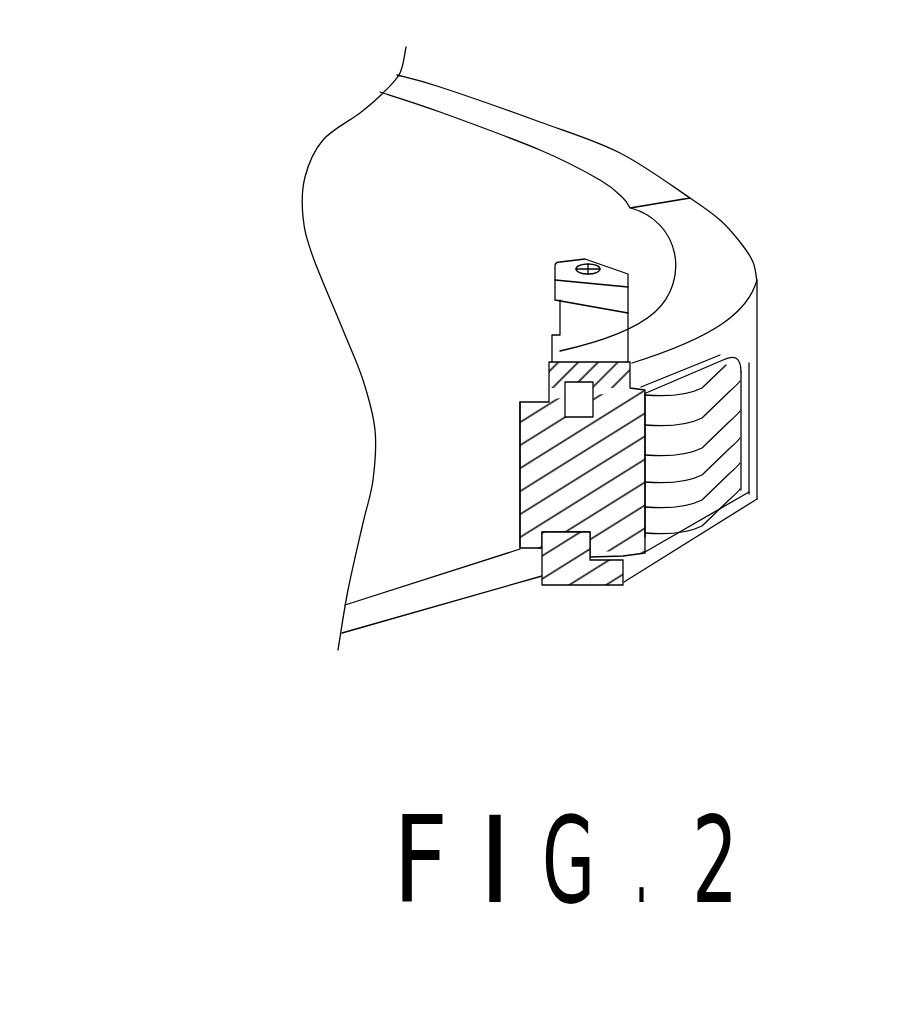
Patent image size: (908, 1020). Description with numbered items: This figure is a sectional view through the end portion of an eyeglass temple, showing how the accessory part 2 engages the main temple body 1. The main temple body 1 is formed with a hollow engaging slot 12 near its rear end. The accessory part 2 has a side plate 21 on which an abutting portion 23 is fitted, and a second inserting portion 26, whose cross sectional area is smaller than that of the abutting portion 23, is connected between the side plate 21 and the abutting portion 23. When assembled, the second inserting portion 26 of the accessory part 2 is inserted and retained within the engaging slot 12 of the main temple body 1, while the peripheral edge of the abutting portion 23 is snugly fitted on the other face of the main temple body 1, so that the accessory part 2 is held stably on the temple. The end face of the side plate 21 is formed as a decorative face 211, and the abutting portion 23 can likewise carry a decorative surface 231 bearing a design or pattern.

The main temple body 1 is at (731, 203).
The engaging slot 12 is at (566, 416).
The accessory part 2 is at (399, 505).
The side plate 21 is at (643, 567).
The decorative face 211 is at (722, 470).
The abutting portion 23 is at (528, 397).
The decorative surface 231 is at (519, 462).
The second inserting portion 26 is at (567, 646).